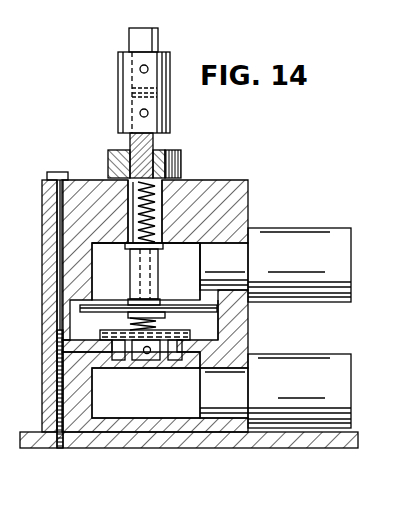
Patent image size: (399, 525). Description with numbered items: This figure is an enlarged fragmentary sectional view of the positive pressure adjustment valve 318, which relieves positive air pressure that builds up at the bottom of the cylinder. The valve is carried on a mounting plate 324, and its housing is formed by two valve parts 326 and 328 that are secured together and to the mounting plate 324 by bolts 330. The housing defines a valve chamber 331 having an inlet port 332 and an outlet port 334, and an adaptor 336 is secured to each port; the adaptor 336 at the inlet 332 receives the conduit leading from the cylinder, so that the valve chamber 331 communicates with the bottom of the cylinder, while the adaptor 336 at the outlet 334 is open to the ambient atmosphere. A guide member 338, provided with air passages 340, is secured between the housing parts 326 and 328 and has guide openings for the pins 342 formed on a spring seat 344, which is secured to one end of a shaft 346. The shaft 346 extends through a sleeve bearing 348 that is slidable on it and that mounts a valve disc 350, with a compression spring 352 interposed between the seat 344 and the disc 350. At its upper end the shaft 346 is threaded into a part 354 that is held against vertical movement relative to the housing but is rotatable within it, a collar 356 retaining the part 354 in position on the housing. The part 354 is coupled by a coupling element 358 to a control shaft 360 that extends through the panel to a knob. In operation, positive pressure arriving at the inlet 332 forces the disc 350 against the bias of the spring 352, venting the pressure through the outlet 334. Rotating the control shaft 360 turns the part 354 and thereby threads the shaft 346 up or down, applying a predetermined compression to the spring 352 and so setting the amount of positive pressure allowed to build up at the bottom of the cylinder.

The positive pressure adjustment valve 318 is at (177, 282).
The mounting plate 324 is at (36, 448).
The valve part 326 is at (252, 178).
The valve part 328 is at (46, 401).
The bolts 330 is at (57, 264).
The valve chamber 331 is at (120, 267).
The inlet port 332 is at (238, 232).
The outlet port 334 is at (232, 362).
The adaptor 336 is at (322, 221).
The guide member 338 is at (240, 335).
The air passages 340 is at (196, 358).
The pins 342 is at (118, 356).
The spring seat 344 is at (112, 331).
The shaft 346 is at (160, 256).
The sleeve bearing 348 is at (160, 278).
The valve disc 350 is at (112, 299).
The compression spring 352 is at (172, 333).
The part 354 is at (168, 136).
The collar 356 is at (112, 160).
The coupling element 358 is at (126, 97).
The control shaft 360 is at (158, 31).